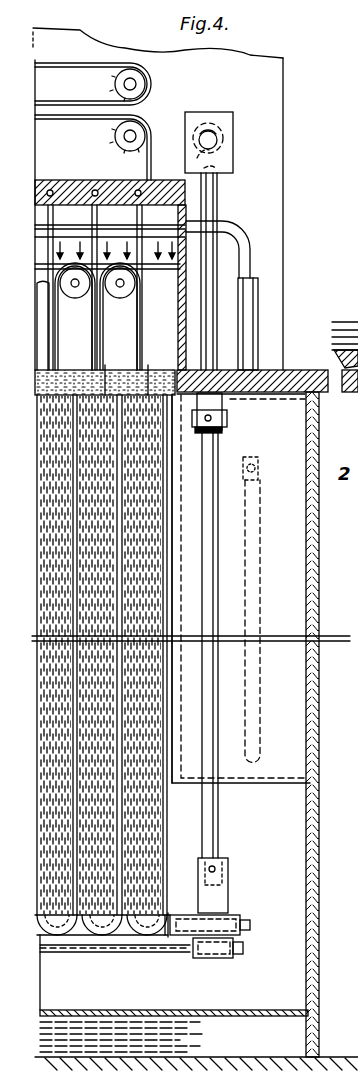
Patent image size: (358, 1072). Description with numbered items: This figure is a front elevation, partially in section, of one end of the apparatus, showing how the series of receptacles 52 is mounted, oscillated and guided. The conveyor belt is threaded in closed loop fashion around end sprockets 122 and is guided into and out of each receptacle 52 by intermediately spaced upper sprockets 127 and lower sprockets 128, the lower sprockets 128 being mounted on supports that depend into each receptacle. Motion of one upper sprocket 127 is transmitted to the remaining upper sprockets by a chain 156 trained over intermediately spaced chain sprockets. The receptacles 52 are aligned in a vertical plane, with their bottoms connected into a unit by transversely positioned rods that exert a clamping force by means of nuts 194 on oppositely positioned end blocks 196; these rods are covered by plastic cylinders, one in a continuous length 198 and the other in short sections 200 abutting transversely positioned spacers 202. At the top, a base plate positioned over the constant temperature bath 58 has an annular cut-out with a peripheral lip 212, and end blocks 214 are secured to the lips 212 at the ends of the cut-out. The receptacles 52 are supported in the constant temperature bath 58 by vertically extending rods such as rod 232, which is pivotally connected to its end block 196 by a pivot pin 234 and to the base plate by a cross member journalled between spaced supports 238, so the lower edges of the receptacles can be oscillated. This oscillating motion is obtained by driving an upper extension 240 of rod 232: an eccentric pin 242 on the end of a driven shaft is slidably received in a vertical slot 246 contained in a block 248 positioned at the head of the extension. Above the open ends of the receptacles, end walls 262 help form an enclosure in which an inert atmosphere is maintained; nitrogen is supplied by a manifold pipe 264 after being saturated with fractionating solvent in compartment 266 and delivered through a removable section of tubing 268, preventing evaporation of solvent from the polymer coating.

The end sprocket 122 is at (143, 120).
The vertical slot 246 is at (220, 126).
The block 248 is at (216, 122).
The eccentric pin 242 is at (211, 140).
The manifold pipe 264 is at (73, 228).
The upper extension 240 is at (219, 222).
The removable section of tubing 268 is at (236, 240).
The end wall 262 is at (190, 262).
The upper sprocket 127 is at (122, 293).
The chain 156 is at (118, 300).
The end block 214 is at (340, 372).
The spaced support 238 is at (222, 412).
The peripheral lip 212 is at (173, 397).
The constant temperature bath 58 is at (325, 588).
The vertically extending rod 232 is at (222, 745).
The compartment 266 is at (271, 786).
The receptacle 52 is at (168, 815).
The pivot pin 234 is at (216, 869).
The end block 196 is at (228, 888).
The nut 194 is at (238, 918).
The continuous length of plastic cylinder 198 is at (77, 948).
The short section of plastic cylinder 200 is at (113, 945).
The spacer 202 is at (165, 945).
The lower sprocket 128 is at (187, 956).